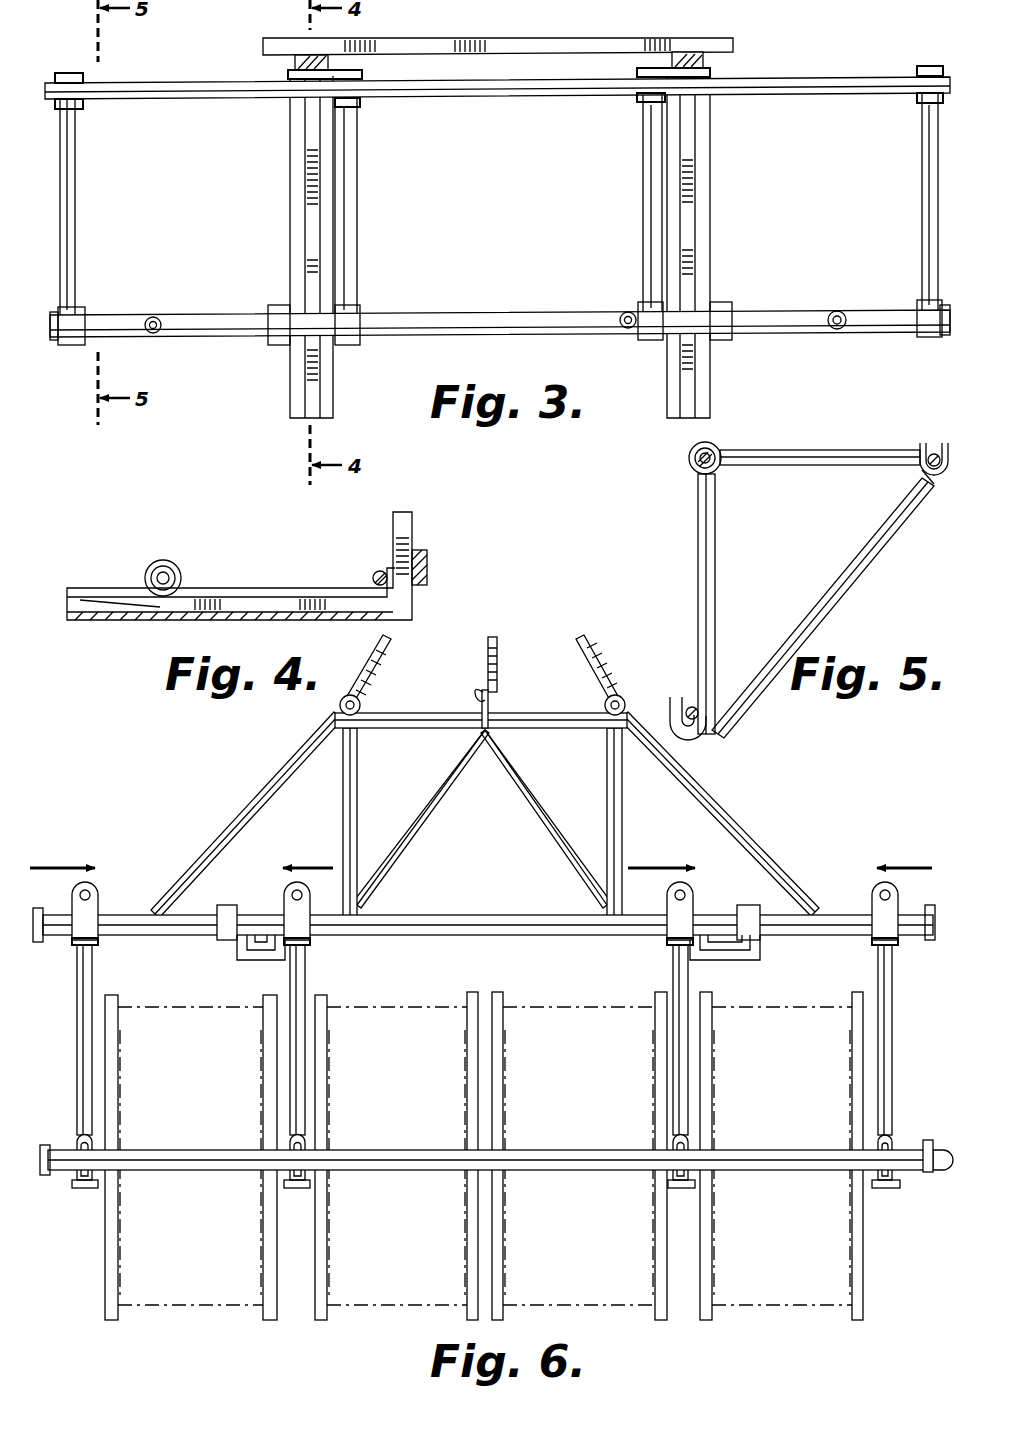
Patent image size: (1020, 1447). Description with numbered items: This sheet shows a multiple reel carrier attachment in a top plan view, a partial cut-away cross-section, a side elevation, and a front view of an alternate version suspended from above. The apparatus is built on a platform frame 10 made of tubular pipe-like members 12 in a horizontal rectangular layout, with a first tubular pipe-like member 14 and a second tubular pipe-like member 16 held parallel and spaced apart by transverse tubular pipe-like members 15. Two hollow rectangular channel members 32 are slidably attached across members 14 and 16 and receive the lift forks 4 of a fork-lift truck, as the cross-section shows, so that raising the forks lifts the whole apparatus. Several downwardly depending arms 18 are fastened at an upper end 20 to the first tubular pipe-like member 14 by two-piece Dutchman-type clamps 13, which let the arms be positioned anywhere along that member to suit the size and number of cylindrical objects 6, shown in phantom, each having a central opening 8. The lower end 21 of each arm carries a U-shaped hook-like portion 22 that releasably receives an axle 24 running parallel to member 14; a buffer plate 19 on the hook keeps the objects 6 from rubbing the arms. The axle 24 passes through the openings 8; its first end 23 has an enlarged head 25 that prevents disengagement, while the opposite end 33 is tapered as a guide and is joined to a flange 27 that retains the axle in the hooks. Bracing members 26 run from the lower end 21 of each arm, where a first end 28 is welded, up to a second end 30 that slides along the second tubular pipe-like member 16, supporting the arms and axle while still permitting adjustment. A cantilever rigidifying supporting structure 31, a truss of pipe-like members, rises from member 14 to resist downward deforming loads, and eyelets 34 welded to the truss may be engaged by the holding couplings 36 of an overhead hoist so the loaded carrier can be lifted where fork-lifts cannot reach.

In FIG. 3, the lift forks 4 is at (300, 56).
In FIG. 4, the lift forks 4 is at (402, 540).
In FIG. 6, the cylindrical objects 6 is at (225, 1292).
In FIG. 6, the central opening 8 is at (240, 1158).
In FIG. 3, the platform frame 10 is at (795, 60).
In FIG. 3, the tubular pipe-like members 12 is at (236, 74).
In FIG. 3, the Dutchman-type clamp 13 is at (72, 346).
In FIG. 6, the Dutchman-type clamp 13 is at (99, 896).
In FIG. 3, the first tubular pipe-like member 14 is at (195, 318).
In FIG. 4, the first tubular pipe-like member 14 is at (180, 565).
In FIG. 5, the first tubular pipe-like member 14 is at (689, 454).
In FIG. 6, the first tubular pipe-like member 14 is at (500, 935).
In FIG. 3, the transverse tubular pipe-like members 15 is at (78, 206).
In FIG. 5, the transverse tubular pipe-like members 15 is at (838, 452).
In FIG. 3, the second tubular pipe-like member 16 is at (525, 92).
In FIG. 4, the second tubular pipe-like member 16 is at (372, 573).
In FIG. 5, the second tubular pipe-like member 16 is at (934, 445).
In FIG. 5, the downwardly depending arms 18 is at (700, 550).
In FIG. 6, the downwardly depending arms 18 is at (93, 972).
In FIG. 6, the buffer plate 19 is at (90, 1192).
In FIG. 6, the upper end 20 is at (97, 944).
In FIG. 5, the lower end 21 is at (700, 700).
In FIG. 6, the lower end 21 is at (92, 1125).
In FIG. 5, the U-shaped hook-like portion 22 is at (700, 742).
In FIG. 6, the U-shaped hook-like portion 22 is at (93, 1150).
In FIG. 6, the first end 23 is at (62, 1150).
In FIG. 5, the axle 24 is at (712, 730).
In FIG. 6, the axle 24 is at (572, 1168).
In FIG. 6, the enlarged head 25 is at (45, 1178).
In FIG. 5, the bracing members 26 is at (850, 578).
In FIG. 6, the flange 27 is at (930, 1175).
In FIG. 5, the first end 28 is at (725, 712).
In FIG. 5, the second end 30 is at (925, 482).
In FIG. 3, the cantilever rigidifying supporting structure 31 is at (837, 334).
In FIG. 6, the cantilever rigidifying supporting structure 31 is at (264, 782).
In FIG. 3, the channel members 32 is at (296, 190).
In FIG. 4, the channel members 32 is at (150, 615).
In FIG. 6, the channel members 32 is at (242, 960).
In FIG. 6, the opposite end 33 is at (950, 1150).
In FIG. 6, the eyelets 34 is at (340, 706).
In FIG. 6, the holding couplings 36 is at (372, 660).